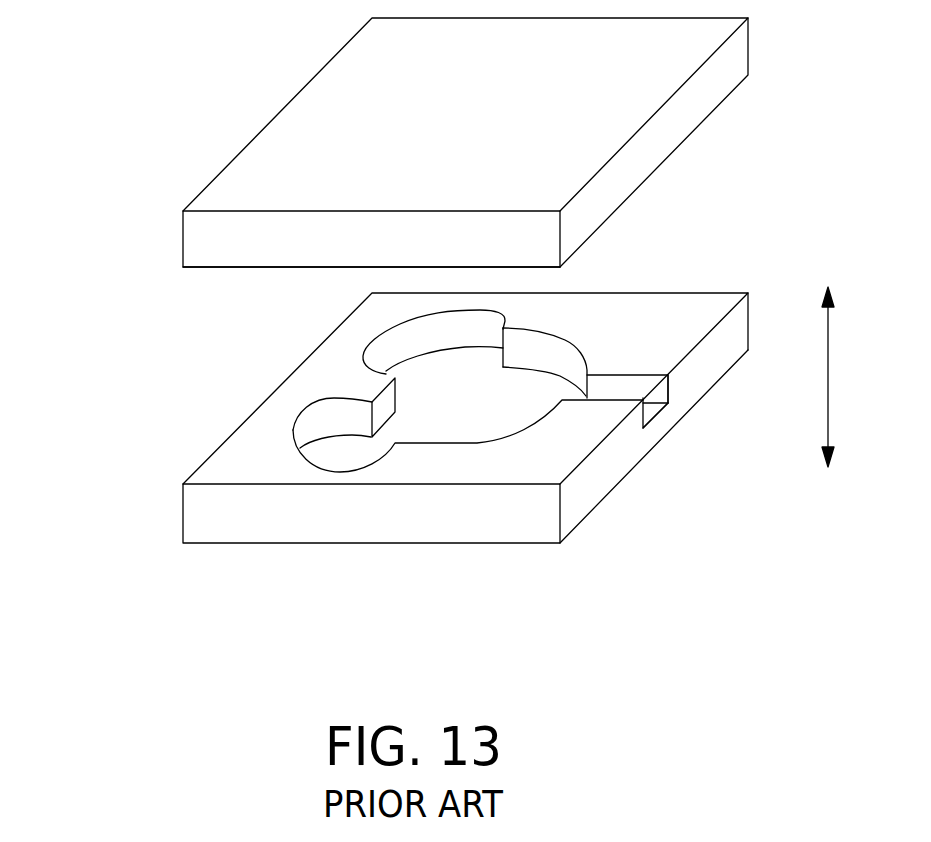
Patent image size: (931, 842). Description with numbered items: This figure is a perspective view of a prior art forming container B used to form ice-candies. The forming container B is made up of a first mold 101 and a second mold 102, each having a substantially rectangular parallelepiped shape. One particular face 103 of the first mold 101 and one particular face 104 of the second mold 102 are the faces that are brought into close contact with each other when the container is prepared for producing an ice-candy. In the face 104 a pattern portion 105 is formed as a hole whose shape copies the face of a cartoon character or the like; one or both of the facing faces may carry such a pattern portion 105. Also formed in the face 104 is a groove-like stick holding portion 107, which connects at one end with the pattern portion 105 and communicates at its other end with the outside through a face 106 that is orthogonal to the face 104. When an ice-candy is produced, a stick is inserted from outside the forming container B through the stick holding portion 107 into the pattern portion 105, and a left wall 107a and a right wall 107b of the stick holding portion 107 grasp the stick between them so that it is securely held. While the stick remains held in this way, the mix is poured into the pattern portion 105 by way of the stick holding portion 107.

The first mold 101 is at (183, 238).
The second mold 102 is at (183, 518).
The face 103 is at (215, 277).
The face 104 is at (225, 438).
The pattern portion 105 is at (568, 330).
The face 106 is at (573, 500).
The stick holding portion 107 is at (628, 368).
The left wall 107a is at (617, 412).
The right wall 107b is at (647, 388).
The forming container B is at (153, 110).